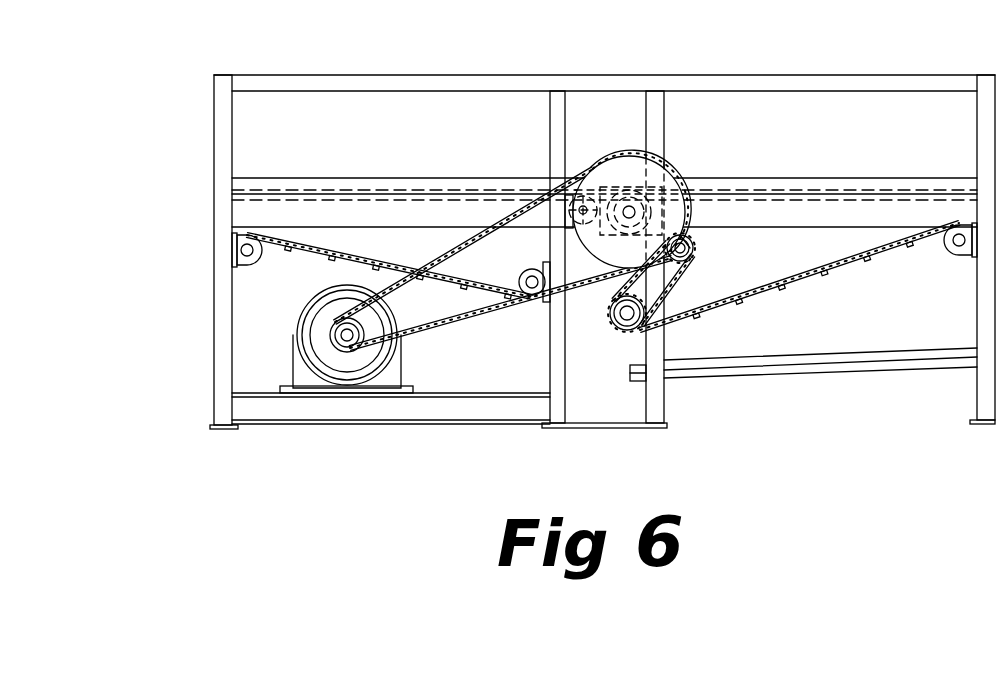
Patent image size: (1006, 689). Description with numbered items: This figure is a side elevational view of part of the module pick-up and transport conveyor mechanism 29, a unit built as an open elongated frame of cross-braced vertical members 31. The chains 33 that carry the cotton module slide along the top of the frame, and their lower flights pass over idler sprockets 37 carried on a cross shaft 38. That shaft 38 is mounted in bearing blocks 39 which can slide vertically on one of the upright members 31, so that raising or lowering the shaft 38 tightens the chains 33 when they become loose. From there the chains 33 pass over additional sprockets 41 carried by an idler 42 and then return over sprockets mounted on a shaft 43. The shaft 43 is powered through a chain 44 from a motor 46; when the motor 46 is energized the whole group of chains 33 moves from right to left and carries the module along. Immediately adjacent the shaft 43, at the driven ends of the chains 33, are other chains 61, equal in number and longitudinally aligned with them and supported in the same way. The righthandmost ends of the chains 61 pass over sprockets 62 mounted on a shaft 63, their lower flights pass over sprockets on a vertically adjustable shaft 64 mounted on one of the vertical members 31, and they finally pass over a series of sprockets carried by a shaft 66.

The module pick-up and transport conveyor mechanism 29 is at (701, 73).
The vertical members 31 is at (552, 373).
The chains 33 is at (838, 190).
The idler sprockets 37 is at (625, 332).
The cross shaft 38 is at (647, 306).
The bearing blocks 39 is at (645, 328).
The sprockets 41 is at (694, 250).
The idler 42 is at (682, 236).
The shaft 43 is at (633, 212).
The chain 44 is at (449, 320).
The motor 46 is at (312, 318).
The chains 61 is at (259, 196).
The sprockets 62 is at (598, 165).
The shaft 63 is at (578, 198).
The vertically adjustable shaft 64 is at (528, 281).
The shaft 66 is at (245, 251).